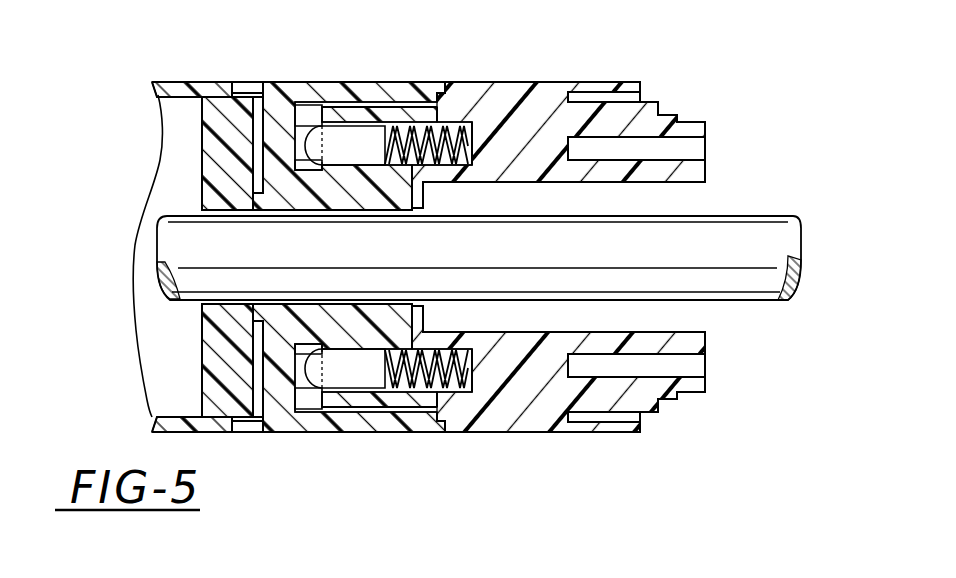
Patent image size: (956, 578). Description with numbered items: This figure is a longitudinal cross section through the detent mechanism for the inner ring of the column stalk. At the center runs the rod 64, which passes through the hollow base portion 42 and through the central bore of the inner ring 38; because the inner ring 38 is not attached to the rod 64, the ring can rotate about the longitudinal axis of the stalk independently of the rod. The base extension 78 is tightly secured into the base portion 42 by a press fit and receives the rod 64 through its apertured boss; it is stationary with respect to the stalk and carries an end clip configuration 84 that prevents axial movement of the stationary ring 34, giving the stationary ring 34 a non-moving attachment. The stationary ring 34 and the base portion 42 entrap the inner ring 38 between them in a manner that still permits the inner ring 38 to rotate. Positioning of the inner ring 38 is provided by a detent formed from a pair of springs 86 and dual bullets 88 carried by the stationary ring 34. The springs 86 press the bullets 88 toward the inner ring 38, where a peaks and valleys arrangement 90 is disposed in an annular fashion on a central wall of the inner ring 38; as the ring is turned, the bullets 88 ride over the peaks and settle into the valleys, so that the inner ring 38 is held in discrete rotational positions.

The stationary ring 34 is at (550, 102).
The inner ring 38 is at (305, 88).
The base portion 42 is at (178, 85).
The rod 64 is at (770, 228).
The base extension 78 is at (213, 150).
The end clip configuration 84 is at (428, 198).
The springs 86 is at (408, 380).
The bullets 88 is at (342, 378).
The peaks and valleys arrangement 90 is at (337, 125).